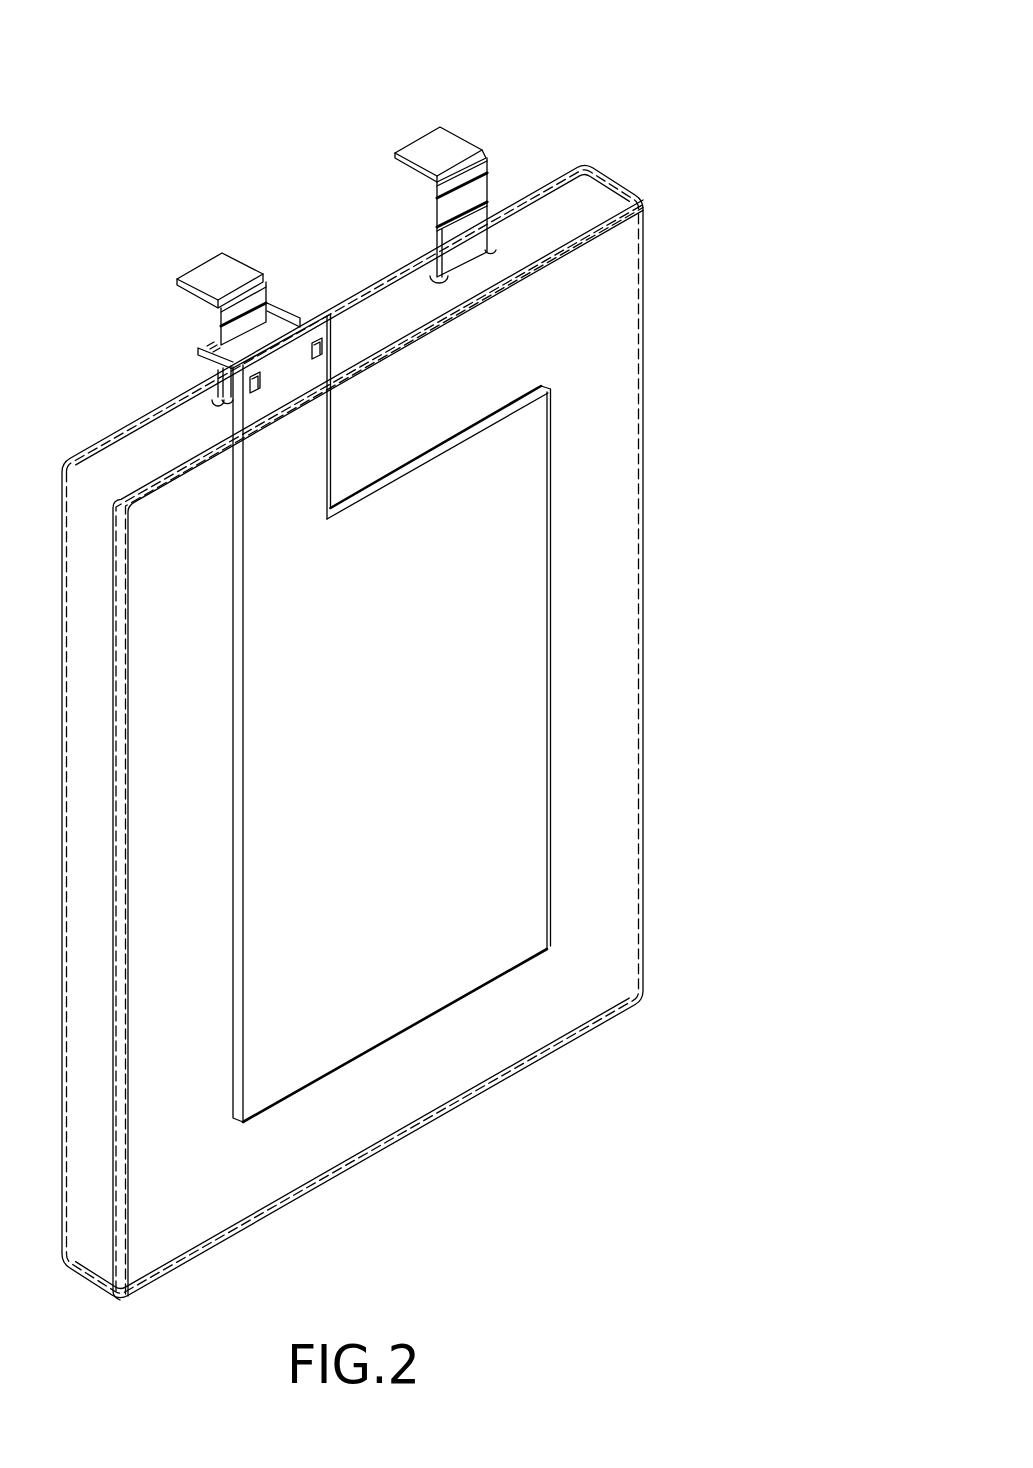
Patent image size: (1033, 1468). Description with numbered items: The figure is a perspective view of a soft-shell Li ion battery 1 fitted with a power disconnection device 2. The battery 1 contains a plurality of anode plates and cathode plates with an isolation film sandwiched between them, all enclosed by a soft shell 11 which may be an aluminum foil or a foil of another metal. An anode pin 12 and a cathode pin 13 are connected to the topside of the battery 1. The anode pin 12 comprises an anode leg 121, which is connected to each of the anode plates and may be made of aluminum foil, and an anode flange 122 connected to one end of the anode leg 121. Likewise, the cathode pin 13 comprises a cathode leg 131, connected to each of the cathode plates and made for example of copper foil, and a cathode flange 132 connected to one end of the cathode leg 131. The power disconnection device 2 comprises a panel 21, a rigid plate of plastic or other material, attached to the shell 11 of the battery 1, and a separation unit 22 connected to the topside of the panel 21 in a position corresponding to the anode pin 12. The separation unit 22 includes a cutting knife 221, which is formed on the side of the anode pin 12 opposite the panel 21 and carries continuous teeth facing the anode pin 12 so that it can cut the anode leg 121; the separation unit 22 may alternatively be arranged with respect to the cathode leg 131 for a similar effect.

The soft-shell Li ion battery 1 is at (666, 245).
The soft shell 11 is at (620, 322).
The anode pin 12 is at (257, 257).
The anode leg 121 is at (277, 311).
The anode flange 122 is at (212, 270).
The cathode pin 13 is at (474, 128).
The cathode leg 131 is at (482, 190).
The cathode flange 132 is at (430, 147).
The power disconnection device 2 is at (553, 633).
The panel 21 is at (520, 565).
The separation unit 22 is at (197, 360).
The cutting knife 221 is at (222, 350).